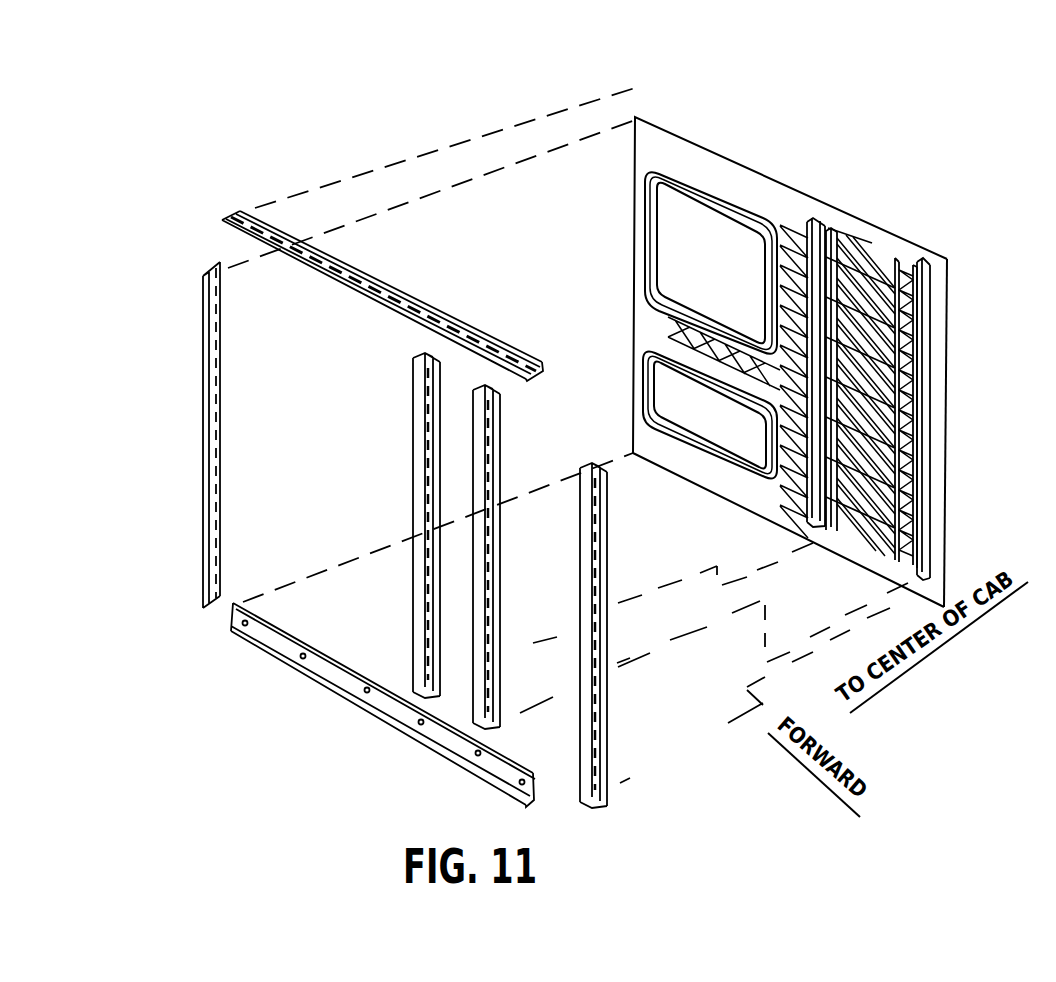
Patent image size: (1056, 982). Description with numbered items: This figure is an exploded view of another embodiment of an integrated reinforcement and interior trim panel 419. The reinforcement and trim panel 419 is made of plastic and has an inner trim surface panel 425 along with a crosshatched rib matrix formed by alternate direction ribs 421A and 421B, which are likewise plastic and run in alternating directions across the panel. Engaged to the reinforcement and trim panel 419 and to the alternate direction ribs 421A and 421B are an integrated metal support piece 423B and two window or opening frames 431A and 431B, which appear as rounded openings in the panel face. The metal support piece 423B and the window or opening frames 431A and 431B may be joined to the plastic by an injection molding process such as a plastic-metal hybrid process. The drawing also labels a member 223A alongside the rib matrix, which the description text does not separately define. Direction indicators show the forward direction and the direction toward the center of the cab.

The integrated reinforcement and interior trim panel 419 is at (767, 177).
The window or opening frame 431A is at (700, 193).
The window or opening frame 431B is at (698, 455).
The integrated metal support piece 423B is at (810, 218).
The alternate direction rib 421A is at (862, 252).
The alternate direction rib 421B is at (900, 347).
The corner channel member 223A is at (927, 270).
The inner trim surface panel 425 is at (948, 400).